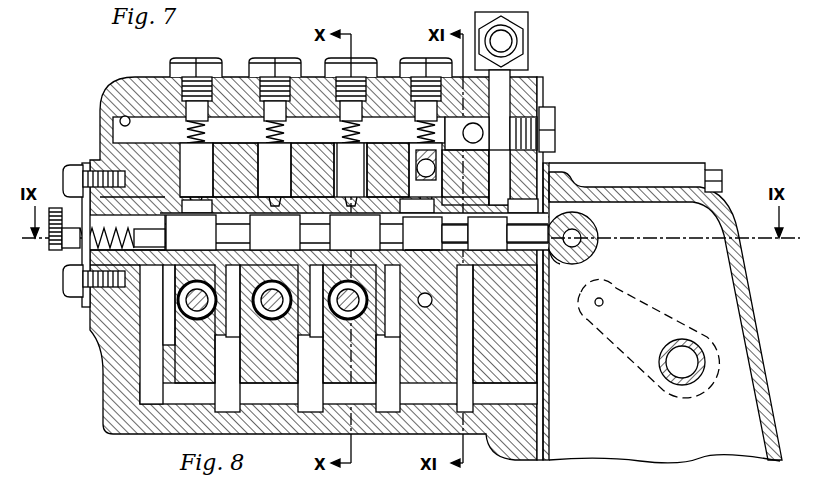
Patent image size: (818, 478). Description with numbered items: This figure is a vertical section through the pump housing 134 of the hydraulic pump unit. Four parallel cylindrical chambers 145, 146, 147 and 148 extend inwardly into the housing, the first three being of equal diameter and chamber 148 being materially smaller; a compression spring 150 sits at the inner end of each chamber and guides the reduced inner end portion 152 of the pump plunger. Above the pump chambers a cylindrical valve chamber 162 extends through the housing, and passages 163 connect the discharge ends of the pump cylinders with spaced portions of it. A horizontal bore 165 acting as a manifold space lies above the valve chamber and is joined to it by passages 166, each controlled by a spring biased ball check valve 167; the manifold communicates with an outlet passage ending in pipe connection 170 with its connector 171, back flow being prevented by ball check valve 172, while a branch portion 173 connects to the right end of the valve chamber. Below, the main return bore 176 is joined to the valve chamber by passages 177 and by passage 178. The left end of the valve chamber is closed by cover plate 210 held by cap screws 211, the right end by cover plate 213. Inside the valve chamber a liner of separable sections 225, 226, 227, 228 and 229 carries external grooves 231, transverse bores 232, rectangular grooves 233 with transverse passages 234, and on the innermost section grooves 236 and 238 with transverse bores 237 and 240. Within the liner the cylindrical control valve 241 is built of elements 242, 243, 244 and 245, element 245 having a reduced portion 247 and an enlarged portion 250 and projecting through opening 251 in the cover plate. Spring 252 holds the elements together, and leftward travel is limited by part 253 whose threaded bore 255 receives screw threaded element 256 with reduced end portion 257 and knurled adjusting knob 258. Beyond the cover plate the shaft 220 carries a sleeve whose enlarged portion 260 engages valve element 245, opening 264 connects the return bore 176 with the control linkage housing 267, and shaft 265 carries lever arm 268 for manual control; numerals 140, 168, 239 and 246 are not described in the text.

The pump housing 134 is at (103, 383).
The nut 140 is at (519, 57).
The cylindrical chamber 145 is at (192, 324).
The cylindrical chamber 146 is at (269, 324).
The cylindrical chamber 147 is at (348, 320).
The cylindrical chamber 148 is at (425, 308).
The compression spring 150 is at (276, 319).
The reduced inner end portion 152 is at (200, 319).
The cylindrical valve chamber 162 is at (530, 294).
The passage 163 is at (178, 277).
The horizontal bore 165 is at (330, 136).
The passage 166 is at (275, 184).
The spring biased ball check valve 167 is at (206, 148).
The control rod 168 is at (505, 101).
The pipe connection 170 is at (528, 22).
The connector 171 is at (517, 44).
The spring biased ball check valve 172 is at (491, 122).
The branch portion 173 is at (494, 157).
The bore 176 is at (358, 399).
The passage 177 is at (155, 366).
The passage 178 is at (462, 366).
The cover plate 210 is at (90, 169).
The cap screw 211 is at (66, 292).
The cover plate 213 is at (549, 346).
The shaft 220 is at (593, 247).
The liner section 225 is at (115, 287).
The liner section 226 is at (233, 197).
The liner section 227 is at (312, 170).
The liner section 228 is at (388, 170).
The liner section 229 is at (465, 177).
The circumferential external groove 231 is at (190, 197).
The transverse bore 232 is at (197, 206).
The circumferential external groove 233 is at (311, 192).
The transverse passage 234 is at (312, 192).
The circumferential external groove 236 is at (528, 156).
The transverse bore 237 is at (523, 206).
The circumferential external groove 238 is at (465, 192).
The bearing shell 239 is at (417, 206).
The transverse bore 240 is at (458, 232).
The cylindrical control valve 241 is at (363, 183).
The valve element 242 is at (208, 246).
The valve element 243 is at (283, 249).
The valve element 244 is at (362, 249).
The valve element 245 is at (434, 233).
The cam 246 is at (414, 250).
The intermediate reduced portion 247 is at (470, 240).
The enlarged cylindrical portion 250 is at (504, 233).
The coaxial opening 251 is at (554, 258).
The compression spring 252 is at (132, 187).
The inwardly projecting part 253 is at (76, 252).
The internally threaded bore 255 is at (126, 258).
The screw threaded element 256 is at (63, 205).
The reduced end portion 257 is at (126, 223).
The knurled adjusting knob 258 is at (50, 246).
The enlarged portion 260 is at (589, 228).
The opening 264 is at (549, 388).
The shaft 265 is at (686, 387).
The control linkage housing 267 is at (751, 308).
The lever arm 268 is at (660, 318).